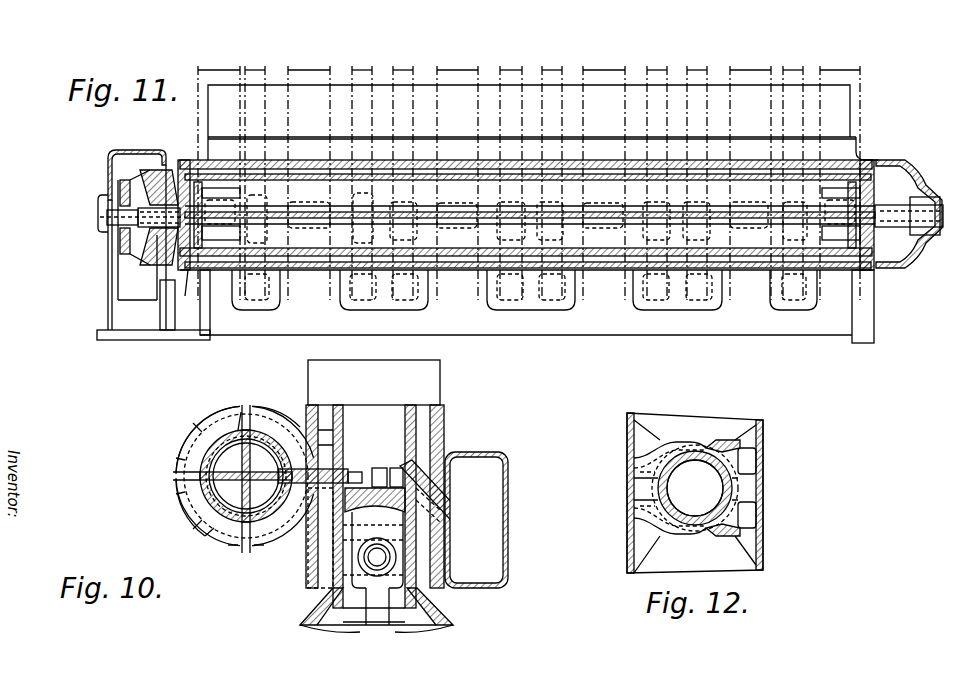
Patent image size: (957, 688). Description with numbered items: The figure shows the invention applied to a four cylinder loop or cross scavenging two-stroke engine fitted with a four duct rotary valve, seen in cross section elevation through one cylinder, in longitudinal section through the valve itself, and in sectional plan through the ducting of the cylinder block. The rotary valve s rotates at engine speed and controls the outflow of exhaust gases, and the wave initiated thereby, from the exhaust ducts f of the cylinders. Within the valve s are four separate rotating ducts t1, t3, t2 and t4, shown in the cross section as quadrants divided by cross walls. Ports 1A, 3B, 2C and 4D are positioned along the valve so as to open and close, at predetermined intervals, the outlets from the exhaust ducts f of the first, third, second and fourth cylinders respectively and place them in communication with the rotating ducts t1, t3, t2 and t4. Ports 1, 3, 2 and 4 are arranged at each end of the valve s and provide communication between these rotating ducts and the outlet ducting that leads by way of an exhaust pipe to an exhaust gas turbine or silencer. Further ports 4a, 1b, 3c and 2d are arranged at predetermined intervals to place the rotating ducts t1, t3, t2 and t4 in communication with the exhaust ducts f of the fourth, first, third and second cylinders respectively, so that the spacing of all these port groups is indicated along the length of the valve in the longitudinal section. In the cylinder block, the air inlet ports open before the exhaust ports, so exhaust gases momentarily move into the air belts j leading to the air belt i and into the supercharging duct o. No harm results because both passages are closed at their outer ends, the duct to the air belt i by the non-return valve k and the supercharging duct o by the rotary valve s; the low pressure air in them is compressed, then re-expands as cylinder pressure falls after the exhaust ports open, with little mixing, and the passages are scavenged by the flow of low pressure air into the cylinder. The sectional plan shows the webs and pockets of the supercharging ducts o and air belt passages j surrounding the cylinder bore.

In FIG. 11, the port 1 is at (215, 174).
In FIG. 10, the port 1 is at (302, 522).
In FIG. 10, the port 2 is at (203, 432).
In FIG. 10, the port 3 is at (257, 412).
In FIG. 11, the port 4 is at (836, 174).
In FIG. 11, the port 1b is at (309, 174).
In FIG. 10, the port 1b is at (310, 445).
In FIG. 11, the port 1A is at (309, 174).
In FIG. 10, the port 1A is at (275, 547).
In FIG. 11, the port 2d is at (457, 174).
In FIG. 10, the port 2d is at (183, 492).
In FIG. 11, the port 2C is at (457, 174).
In FIG. 10, the port 2C is at (211, 415).
In FIG. 11, the port 3c is at (603, 174).
In FIG. 10, the port 3c is at (241, 412).
In FIG. 11, the port 3B is at (604, 174).
In FIG. 10, the port 3B is at (280, 412).
In FIG. 11, the port 4a is at (745, 174).
In FIG. 10, the port 4a is at (257, 552).
In FIG. 11, the port 4D is at (750, 174).
In FIG. 10, the port 4D is at (205, 542).
In FIG. 11, the rotary valve s is at (183, 292).
In FIG. 10, the rotary valve s is at (227, 517).
In FIG. 10, the rotating duct t1 is at (259, 496).
In FIG. 10, the rotating duct t2 is at (228, 469).
In FIG. 10, the rotating duct t3 is at (259, 469).
In FIG. 10, the rotating duct t4 is at (228, 496).
In FIG. 10, the supercharging duct o is at (297, 563).
In FIG. 12, the supercharging duct o is at (663, 438).
In FIG. 10, the exhaust duct f is at (323, 478).
In FIG. 12, the exhaust duct f is at (638, 498).
In FIG. 10, the valve a is at (377, 488).
In FIG. 10, the air belt j is at (415, 492).
In FIG. 12, the air belt j is at (723, 448).
In FIG. 10, the non-return valve k is at (447, 535).
In FIG. 10, the air belt i is at (476, 520).